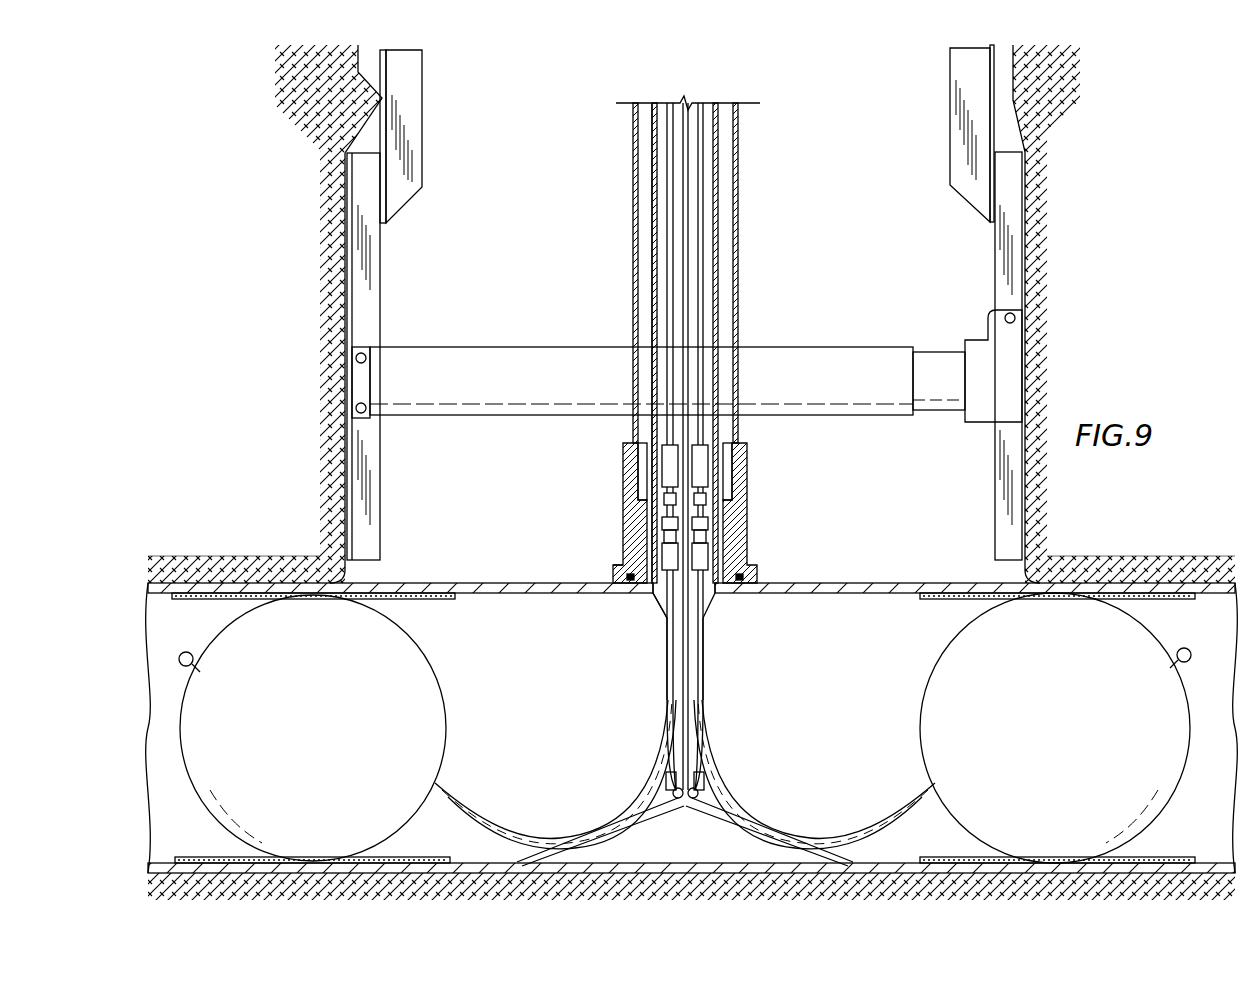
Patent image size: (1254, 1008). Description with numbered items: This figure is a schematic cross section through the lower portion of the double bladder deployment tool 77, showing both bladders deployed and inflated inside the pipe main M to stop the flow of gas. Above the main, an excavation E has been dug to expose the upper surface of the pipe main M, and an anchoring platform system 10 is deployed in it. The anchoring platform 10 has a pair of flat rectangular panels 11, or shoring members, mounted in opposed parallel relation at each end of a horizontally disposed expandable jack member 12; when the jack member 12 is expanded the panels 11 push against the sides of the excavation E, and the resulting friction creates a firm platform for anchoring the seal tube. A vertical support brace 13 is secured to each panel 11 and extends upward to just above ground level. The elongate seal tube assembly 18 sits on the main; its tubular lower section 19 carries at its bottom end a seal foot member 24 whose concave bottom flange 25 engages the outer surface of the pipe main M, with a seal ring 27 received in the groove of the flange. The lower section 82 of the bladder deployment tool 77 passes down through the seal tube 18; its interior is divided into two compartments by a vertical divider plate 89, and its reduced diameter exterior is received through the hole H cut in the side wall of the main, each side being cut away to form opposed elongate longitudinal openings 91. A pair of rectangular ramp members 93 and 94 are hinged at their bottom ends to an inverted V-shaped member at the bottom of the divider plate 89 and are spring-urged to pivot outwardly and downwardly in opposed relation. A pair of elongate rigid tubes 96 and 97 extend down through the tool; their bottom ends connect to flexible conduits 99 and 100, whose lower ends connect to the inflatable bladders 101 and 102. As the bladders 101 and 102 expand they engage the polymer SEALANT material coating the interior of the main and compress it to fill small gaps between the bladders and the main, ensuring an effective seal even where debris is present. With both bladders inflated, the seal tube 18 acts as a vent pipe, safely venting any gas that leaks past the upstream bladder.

The anchoring platform system 10 is at (684, 302).
The flat rectangular panels 11 is at (378, 236).
The expandable jack member 12 is at (500, 346).
The vertical support brace 13 is at (415, 158).
The elongate seal tube assembly 18 is at (750, 185).
The tubular lower section 19 is at (736, 233).
The seal foot member 24 is at (745, 514).
The concave bottom flange 25 is at (622, 563).
The seal ring 27 is at (641, 591).
The bladder deployment tool 77 is at (650, 175).
The lower section of the bladder deployment tool 82 is at (650, 226).
The vertical divider plate 89 is at (668, 432).
The elongate longitudinal openings 91 is at (650, 632).
The ramp member 93 is at (620, 828).
The ramp member 94 is at (752, 826).
The elongate rigid tube 96 is at (668, 288).
The elongate rigid tube 97 is at (706, 290).
The flexible conduit 99 is at (510, 830).
The flexible conduit 100 is at (762, 830).
The inflatable bladder 101 is at (316, 721).
The inflatable bladder 102 is at (1082, 729).
The excavation E is at (362, 580).
The hole H is at (720, 594).
The pipe main M is at (808, 583).
The polymer sealant material SEALANT is at (958, 862).